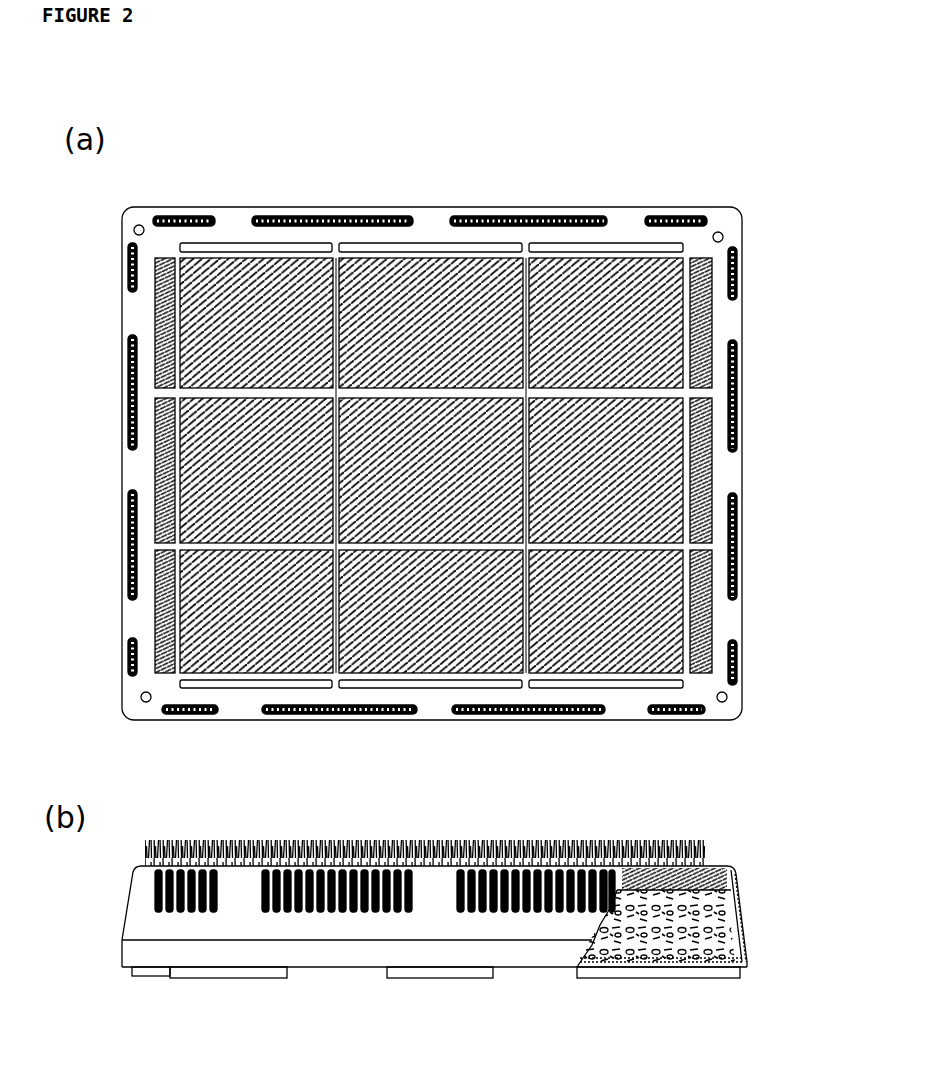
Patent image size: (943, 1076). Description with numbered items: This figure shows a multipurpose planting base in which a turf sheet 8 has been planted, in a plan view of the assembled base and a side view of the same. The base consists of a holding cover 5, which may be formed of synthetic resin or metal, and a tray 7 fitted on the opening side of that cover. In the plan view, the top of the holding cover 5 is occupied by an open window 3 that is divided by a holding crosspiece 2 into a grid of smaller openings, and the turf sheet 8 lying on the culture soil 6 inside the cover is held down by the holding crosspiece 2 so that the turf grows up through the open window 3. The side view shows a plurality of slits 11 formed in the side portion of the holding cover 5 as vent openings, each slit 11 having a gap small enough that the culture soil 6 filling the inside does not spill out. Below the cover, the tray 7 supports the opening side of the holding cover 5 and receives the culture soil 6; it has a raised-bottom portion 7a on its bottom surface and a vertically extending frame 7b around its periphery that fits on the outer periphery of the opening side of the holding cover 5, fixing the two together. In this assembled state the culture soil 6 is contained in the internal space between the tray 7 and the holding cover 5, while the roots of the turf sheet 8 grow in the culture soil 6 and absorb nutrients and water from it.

The holding crosspiece 2 is at (358, 278).
The open window 3 is at (675, 423).
The holding cover 5 is at (528, 209).
The culture soil 6 is at (722, 920).
The tray 7 is at (342, 967).
The raised-bottom portion 7a is at (437, 972).
The vertically extending frame 7b is at (746, 950).
The turf sheet 8 is at (660, 505).
The slit 11 is at (383, 878).